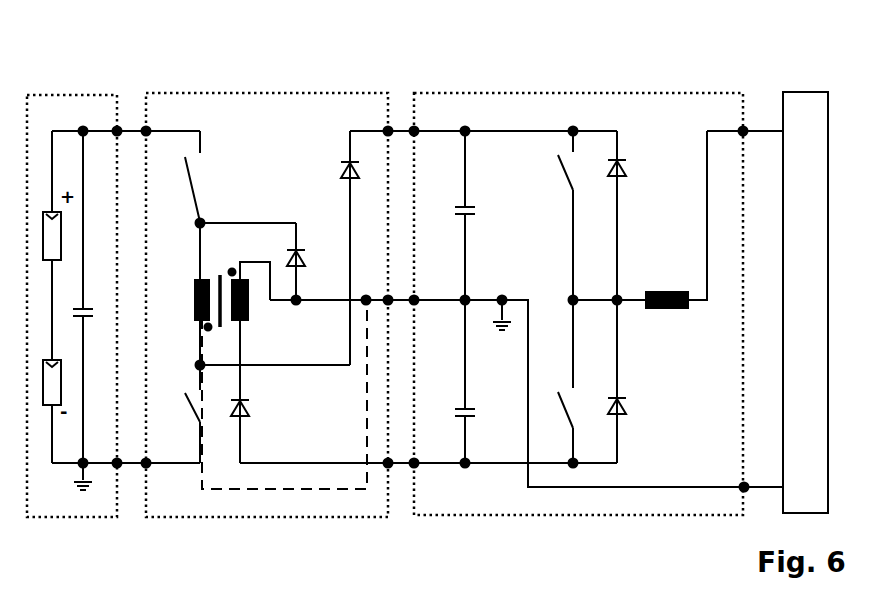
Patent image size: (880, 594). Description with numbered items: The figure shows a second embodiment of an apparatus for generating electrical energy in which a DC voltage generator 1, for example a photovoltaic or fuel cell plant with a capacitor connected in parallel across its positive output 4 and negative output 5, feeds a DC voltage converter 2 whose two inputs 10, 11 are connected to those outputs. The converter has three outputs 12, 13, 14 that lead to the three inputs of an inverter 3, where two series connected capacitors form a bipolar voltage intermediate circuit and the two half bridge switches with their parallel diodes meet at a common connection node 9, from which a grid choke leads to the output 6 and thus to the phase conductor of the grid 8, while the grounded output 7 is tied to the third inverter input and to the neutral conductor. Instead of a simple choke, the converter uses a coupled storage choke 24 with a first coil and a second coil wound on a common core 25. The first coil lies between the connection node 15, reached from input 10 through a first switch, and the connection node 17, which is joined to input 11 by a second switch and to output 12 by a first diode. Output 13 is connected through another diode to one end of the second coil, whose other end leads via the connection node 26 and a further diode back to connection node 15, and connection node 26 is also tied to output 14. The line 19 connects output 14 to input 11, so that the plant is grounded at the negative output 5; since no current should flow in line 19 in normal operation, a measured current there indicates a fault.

The DC voltage generator 1 is at (51, 86).
The DC voltage converter 2 is at (264, 86).
The inverter 3 is at (573, 93).
The positive output 4 is at (117, 131).
The negative output 5 is at (118, 465).
The inverter output 6 is at (743, 130).
The inverter output 7 is at (744, 490).
The grid 8 is at (808, 91).
The common connection node 9 is at (572, 298).
The converter input 10 is at (146, 131).
The converter input 11 is at (147, 465).
The converter output 12 is at (388, 130).
The converter output 13 is at (389, 466).
The converter output 14 is at (388, 298).
The connection node 15 is at (202, 222).
The connection node 17 is at (203, 368).
The line 19 is at (280, 490).
The coupled storage choke 24 is at (173, 258).
The common core 25 is at (220, 275).
The connection node 26 is at (296, 303).